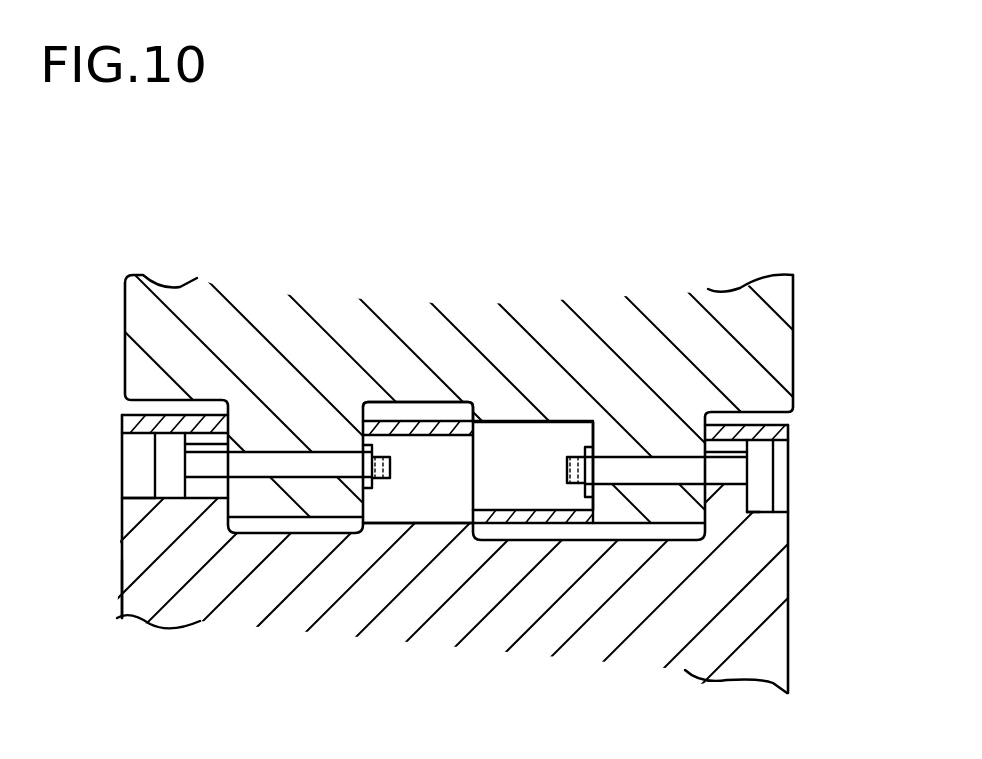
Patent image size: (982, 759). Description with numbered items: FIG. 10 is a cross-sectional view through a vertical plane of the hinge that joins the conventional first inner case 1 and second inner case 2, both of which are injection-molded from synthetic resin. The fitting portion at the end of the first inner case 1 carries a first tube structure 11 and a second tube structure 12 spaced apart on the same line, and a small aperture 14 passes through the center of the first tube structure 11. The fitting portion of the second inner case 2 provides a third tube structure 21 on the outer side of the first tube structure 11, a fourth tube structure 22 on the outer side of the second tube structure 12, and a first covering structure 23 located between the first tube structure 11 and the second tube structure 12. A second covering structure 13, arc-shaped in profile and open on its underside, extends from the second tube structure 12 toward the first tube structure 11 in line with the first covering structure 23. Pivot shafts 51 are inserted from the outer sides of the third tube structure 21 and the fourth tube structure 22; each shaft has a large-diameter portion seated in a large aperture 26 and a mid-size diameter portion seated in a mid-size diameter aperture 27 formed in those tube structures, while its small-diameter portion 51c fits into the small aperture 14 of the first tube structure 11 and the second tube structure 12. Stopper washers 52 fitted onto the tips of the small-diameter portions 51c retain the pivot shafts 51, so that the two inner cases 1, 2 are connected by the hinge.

The first inner case 1 is at (780, 302).
The second inner case 2 is at (770, 641).
The first tube structure 11 is at (200, 617).
The second tube structure 12 is at (635, 420).
The second covering structure 13 is at (517, 508).
The small aperture 14 is at (247, 455).
The third tube structure 21 is at (135, 510).
The fourth tube structure 22 is at (760, 540).
The first covering structure 23 is at (450, 436).
The large aperture 26 is at (140, 432).
The mid-size diameter aperture 27 is at (143, 488).
The pivot shaft 51 is at (168, 462).
The small-diameter portion 51c is at (585, 460).
The stopper washer 52 is at (412, 462).